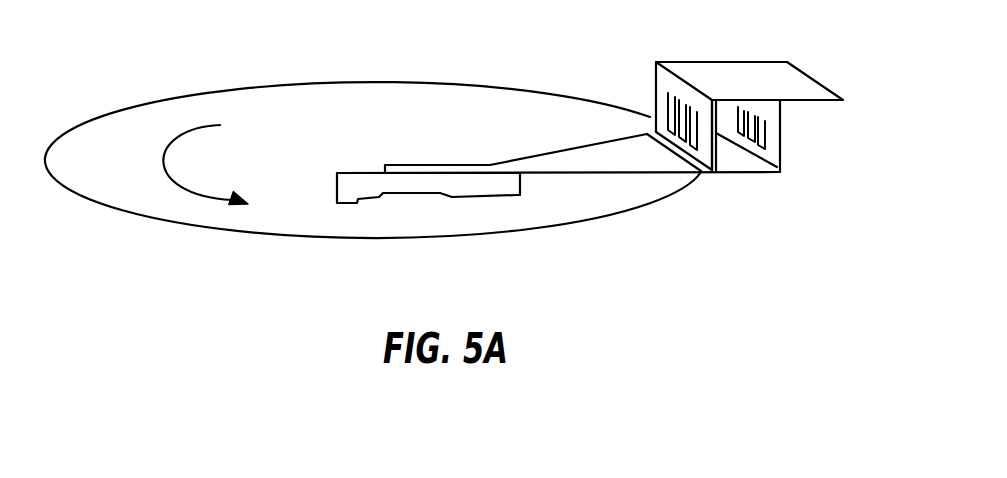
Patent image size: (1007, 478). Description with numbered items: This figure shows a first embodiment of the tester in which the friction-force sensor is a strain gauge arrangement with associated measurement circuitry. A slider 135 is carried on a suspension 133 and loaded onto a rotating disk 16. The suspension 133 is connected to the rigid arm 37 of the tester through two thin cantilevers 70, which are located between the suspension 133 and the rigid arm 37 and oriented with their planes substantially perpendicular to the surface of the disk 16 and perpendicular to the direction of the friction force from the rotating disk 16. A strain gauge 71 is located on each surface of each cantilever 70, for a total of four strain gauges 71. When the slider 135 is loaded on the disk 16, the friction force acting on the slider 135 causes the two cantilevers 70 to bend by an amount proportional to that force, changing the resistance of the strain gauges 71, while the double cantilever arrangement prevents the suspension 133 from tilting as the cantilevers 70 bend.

The disk 16 is at (113, 122).
The suspension 133 is at (607, 155).
The slider 135 is at (366, 200).
The rigid arm 37 is at (803, 88).
The cantilevers 70 is at (668, 63).
The strain gauges 71 is at (667, 105).